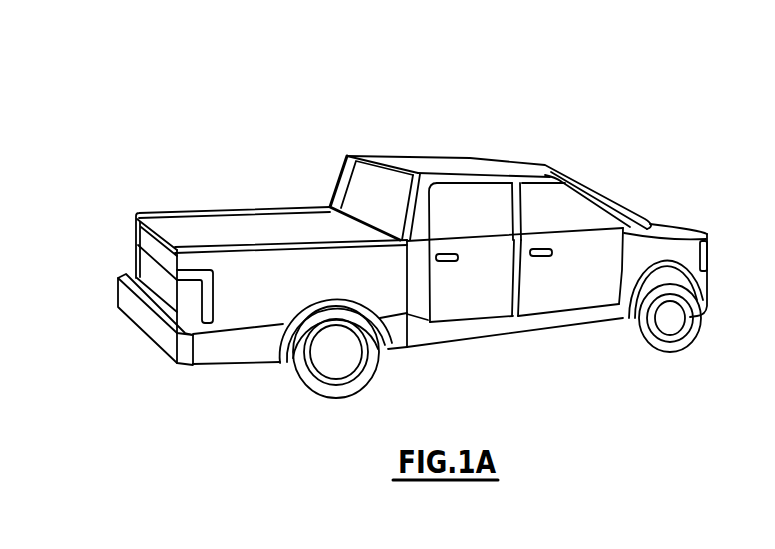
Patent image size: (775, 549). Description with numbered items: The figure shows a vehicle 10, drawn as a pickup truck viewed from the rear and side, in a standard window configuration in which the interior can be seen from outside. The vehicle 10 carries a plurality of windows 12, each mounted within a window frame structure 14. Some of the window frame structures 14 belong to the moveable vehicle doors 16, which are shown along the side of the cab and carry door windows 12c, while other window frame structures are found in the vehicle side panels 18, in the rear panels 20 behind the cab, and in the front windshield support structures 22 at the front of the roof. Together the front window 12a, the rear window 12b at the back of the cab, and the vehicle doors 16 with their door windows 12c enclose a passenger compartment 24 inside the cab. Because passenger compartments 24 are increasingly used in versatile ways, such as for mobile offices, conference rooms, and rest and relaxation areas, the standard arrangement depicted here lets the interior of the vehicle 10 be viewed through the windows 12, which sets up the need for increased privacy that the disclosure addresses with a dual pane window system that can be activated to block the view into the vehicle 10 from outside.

The vehicle 10 is at (412, 222).
The windows 12 is at (499, 181).
The front window 12a is at (622, 205).
The rear window 12b is at (395, 206).
The door windows 12c is at (497, 220).
The window frame structures 14 is at (391, 168).
The vehicle doors 16 is at (571, 273).
The vehicle side panels 18 is at (258, 312).
The rear panels 20 is at (340, 232).
The front windshield support structures 22 is at (588, 190).
The passenger compartment 24 is at (452, 231).